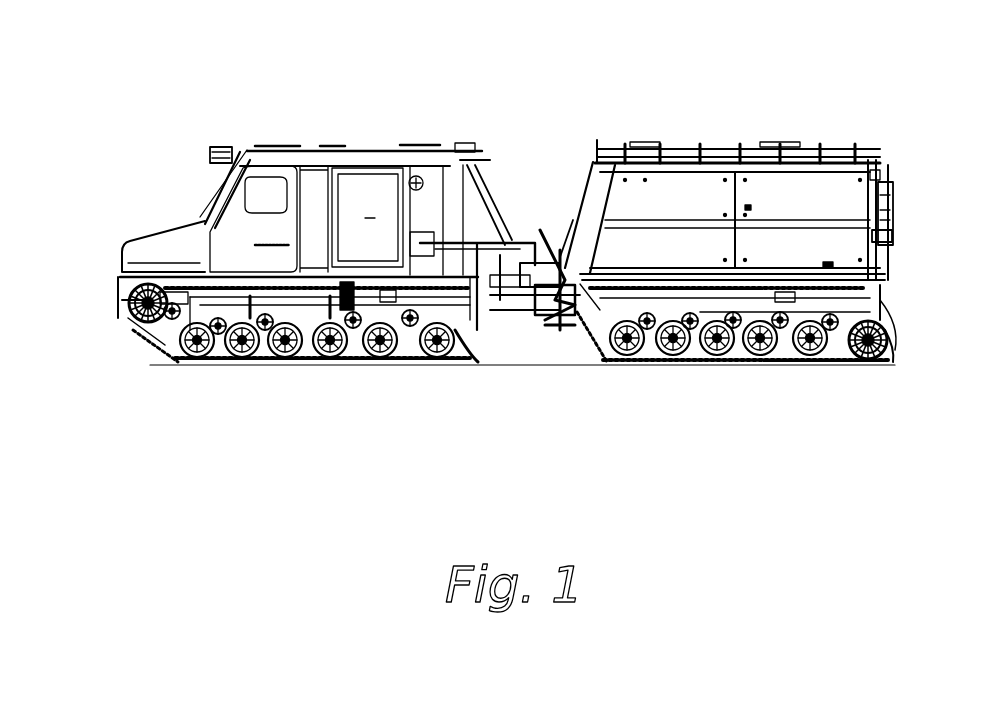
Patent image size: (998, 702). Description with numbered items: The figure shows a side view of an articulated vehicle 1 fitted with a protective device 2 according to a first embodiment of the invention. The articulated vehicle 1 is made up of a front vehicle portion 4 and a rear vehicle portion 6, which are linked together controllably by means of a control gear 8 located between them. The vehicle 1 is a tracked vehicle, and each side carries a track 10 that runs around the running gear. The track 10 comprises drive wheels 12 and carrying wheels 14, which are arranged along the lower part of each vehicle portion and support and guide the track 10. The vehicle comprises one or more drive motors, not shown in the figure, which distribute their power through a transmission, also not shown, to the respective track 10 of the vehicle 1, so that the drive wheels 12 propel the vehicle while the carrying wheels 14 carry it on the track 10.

The articulated vehicle 1 is at (490, 75).
The protective device 2 is at (527, 200).
The front vehicle portion 4 is at (170, 218).
The rear vehicle portion 6 is at (888, 181).
The control gear 8 is at (528, 340).
The track 10 is at (150, 334).
The drive wheels 12 is at (130, 316).
The carrying wheels 14 is at (220, 364).